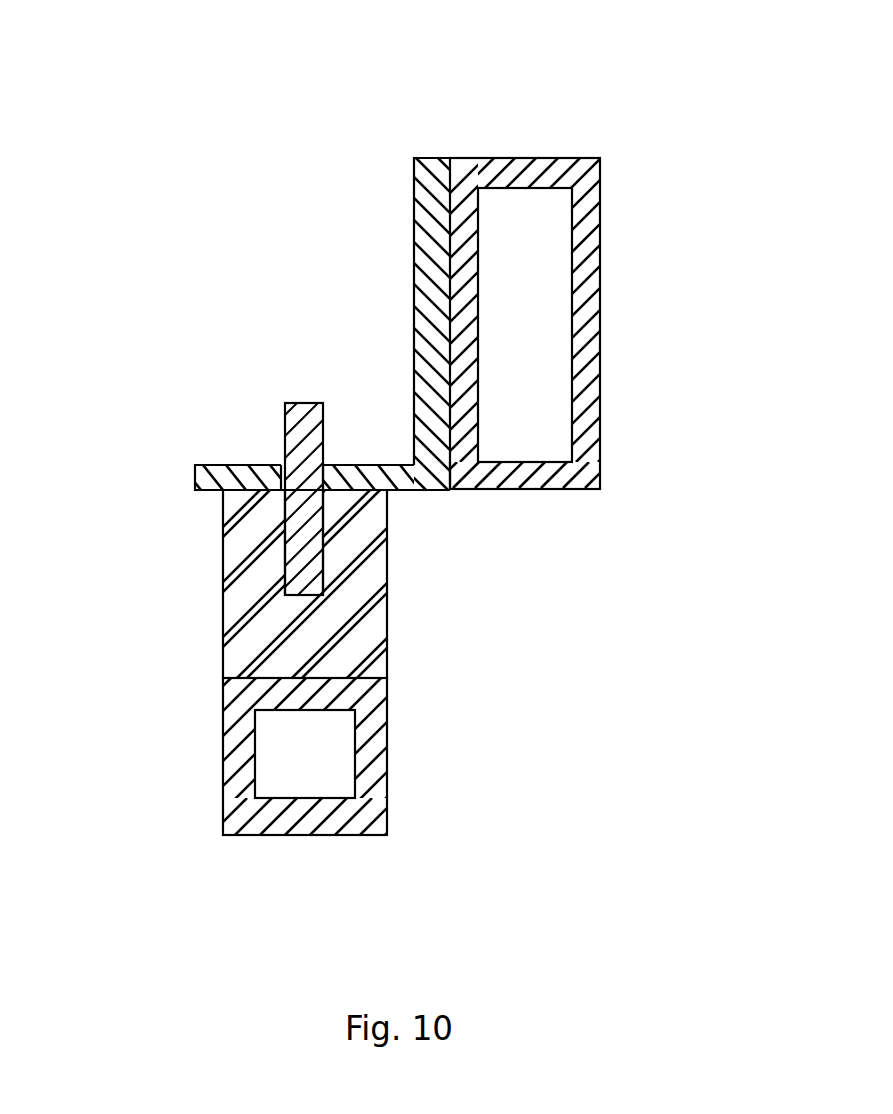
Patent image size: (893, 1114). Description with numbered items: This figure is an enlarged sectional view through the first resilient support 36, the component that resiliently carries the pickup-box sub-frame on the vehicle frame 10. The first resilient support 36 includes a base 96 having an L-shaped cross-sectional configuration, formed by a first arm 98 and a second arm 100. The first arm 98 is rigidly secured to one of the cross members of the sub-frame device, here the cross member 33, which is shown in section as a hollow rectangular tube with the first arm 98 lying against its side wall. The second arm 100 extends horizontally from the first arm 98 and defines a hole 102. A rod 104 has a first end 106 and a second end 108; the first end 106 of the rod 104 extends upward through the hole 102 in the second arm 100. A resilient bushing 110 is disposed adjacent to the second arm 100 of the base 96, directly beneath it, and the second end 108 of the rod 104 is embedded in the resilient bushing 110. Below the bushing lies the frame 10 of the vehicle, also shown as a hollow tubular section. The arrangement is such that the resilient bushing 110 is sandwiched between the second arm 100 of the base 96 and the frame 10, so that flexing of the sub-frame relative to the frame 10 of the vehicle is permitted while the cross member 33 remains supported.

The frame 10 is at (367, 813).
The cross member 33 is at (590, 231).
The first resilient support 36 is at (174, 568).
The base 96 is at (433, 482).
The first arm 98 is at (415, 203).
The second arm 100 is at (200, 478).
The hole 102 is at (287, 455).
The rod 104 is at (305, 578).
The first end 106 is at (307, 401).
The second end 108 is at (289, 597).
The resilient bushing 110 is at (230, 608).